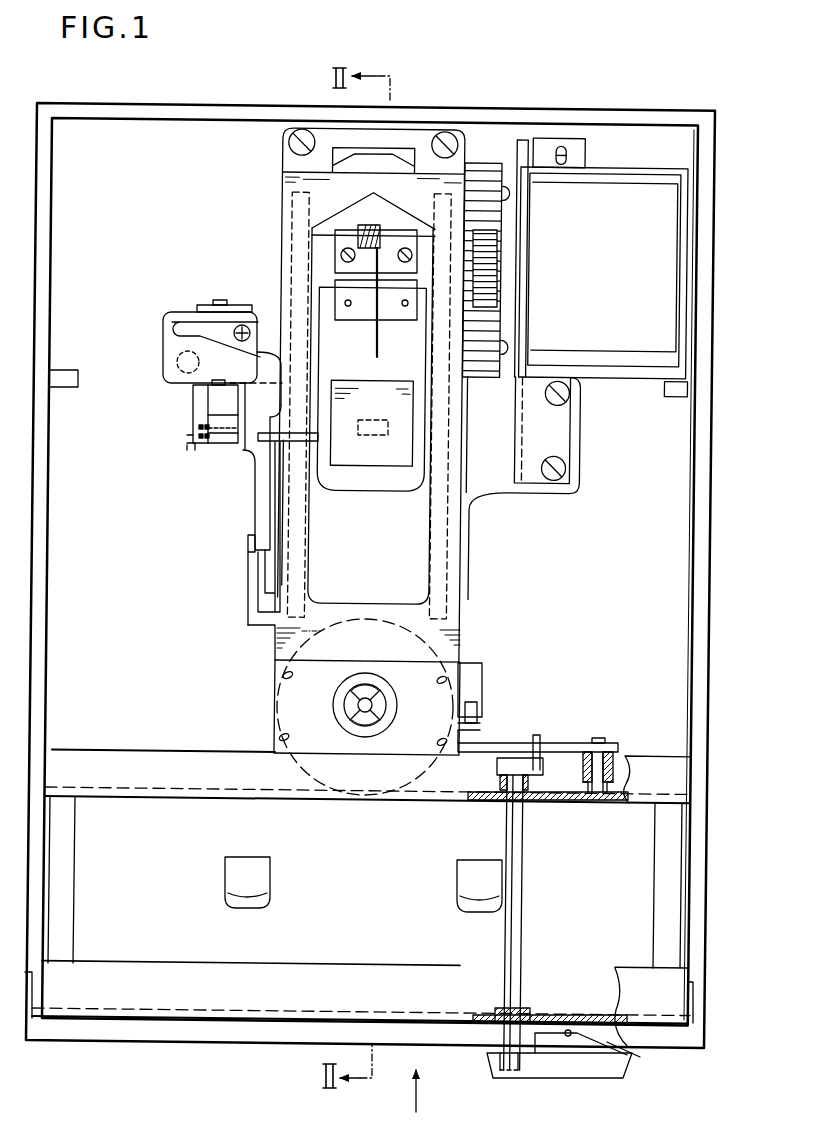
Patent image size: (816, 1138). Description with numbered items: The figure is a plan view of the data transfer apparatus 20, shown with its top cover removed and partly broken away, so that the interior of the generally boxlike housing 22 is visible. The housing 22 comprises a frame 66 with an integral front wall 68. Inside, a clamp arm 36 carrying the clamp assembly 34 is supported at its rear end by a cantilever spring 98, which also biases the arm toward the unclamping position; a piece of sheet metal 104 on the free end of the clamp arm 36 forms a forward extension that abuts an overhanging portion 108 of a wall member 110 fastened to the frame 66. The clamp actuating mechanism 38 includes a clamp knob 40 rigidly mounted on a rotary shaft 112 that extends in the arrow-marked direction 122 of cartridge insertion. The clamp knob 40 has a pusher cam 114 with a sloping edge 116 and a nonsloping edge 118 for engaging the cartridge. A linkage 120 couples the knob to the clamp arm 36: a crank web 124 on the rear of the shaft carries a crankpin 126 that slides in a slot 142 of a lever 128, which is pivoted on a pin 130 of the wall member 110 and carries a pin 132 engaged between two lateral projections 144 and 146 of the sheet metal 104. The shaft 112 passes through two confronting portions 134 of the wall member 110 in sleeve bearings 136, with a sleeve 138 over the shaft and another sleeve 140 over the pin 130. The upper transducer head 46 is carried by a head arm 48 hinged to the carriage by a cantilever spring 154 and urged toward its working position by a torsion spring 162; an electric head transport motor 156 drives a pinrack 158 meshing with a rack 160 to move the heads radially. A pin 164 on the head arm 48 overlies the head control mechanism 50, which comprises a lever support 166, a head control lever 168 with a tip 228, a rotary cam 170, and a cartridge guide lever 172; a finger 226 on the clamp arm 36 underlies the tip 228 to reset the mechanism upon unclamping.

The data transfer apparatus 20 is at (680, 107).
The housing 22 is at (718, 180).
The frame 66 is at (703, 247).
The cantilever spring 98 is at (290, 160).
The rack 160 is at (482, 176).
The pinrack 158 is at (490, 238).
The head transport motor 156 is at (577, 369).
The cantilever spring 154 is at (347, 277).
The lever support 166 is at (228, 300).
The cartridge guide lever 172 is at (244, 325).
The head control mechanism 50 is at (162, 340).
The torsion spring 162 is at (375, 340).
The upper transducer head 46 is at (376, 431).
The head arm 48 is at (374, 492).
The rotary cam 170 is at (219, 443).
The pin 164 is at (258, 460).
The head control lever 168 is at (262, 500).
The tip 228 is at (249, 543).
The finger 226 is at (248, 585).
The clamp arm 36 is at (273, 650).
The clamp assembly 34 is at (277, 668).
The piece of sheet metal 104 is at (355, 666).
The pin 132 is at (456, 692).
The overhanging portion 108 is at (331, 761).
The wall member 110 is at (213, 750).
The lateral projection 146 is at (487, 685).
The lateral projection 144 is at (486, 712).
The slot 142 is at (513, 744).
The crankpin 126 is at (538, 738).
The lever 128 is at (579, 749).
The pin 130 is at (600, 741).
The sleeve 140 is at (619, 769).
The sleeve 138 is at (533, 787).
The crank web 124 is at (496, 773).
The sleeve bearings 136 is at (526, 791).
The confronting portions 134 is at (615, 801).
The clamp actuating mechanism 38 is at (474, 843).
The linkage 120 is at (531, 865).
The rotary shaft 112 is at (504, 940).
The front wall 68 is at (193, 1036).
The sloping edge 116 is at (640, 1057).
The clamp knob 40 is at (540, 1078).
The nonsloping edge 118 is at (568, 1037).
The pusher cam 114 is at (590, 1050).
The direction 122 is at (438, 1093).